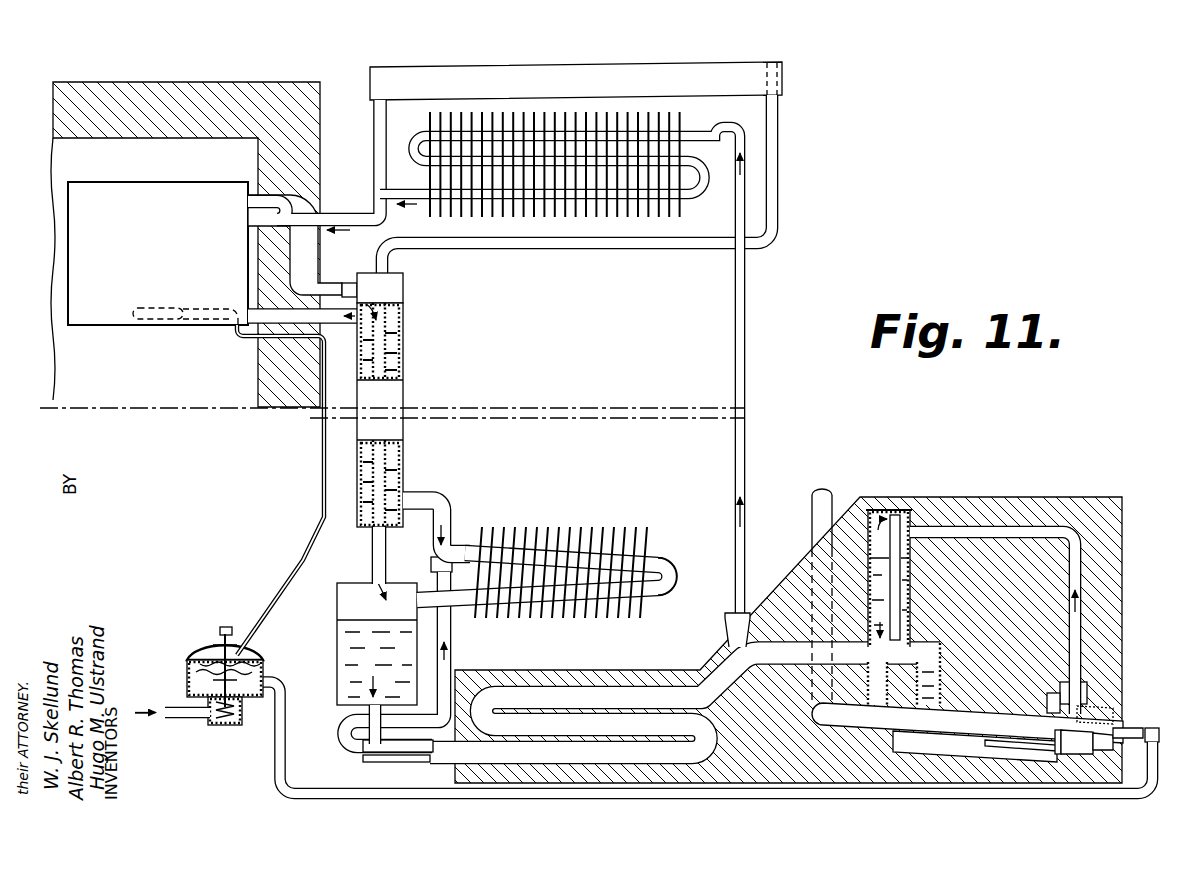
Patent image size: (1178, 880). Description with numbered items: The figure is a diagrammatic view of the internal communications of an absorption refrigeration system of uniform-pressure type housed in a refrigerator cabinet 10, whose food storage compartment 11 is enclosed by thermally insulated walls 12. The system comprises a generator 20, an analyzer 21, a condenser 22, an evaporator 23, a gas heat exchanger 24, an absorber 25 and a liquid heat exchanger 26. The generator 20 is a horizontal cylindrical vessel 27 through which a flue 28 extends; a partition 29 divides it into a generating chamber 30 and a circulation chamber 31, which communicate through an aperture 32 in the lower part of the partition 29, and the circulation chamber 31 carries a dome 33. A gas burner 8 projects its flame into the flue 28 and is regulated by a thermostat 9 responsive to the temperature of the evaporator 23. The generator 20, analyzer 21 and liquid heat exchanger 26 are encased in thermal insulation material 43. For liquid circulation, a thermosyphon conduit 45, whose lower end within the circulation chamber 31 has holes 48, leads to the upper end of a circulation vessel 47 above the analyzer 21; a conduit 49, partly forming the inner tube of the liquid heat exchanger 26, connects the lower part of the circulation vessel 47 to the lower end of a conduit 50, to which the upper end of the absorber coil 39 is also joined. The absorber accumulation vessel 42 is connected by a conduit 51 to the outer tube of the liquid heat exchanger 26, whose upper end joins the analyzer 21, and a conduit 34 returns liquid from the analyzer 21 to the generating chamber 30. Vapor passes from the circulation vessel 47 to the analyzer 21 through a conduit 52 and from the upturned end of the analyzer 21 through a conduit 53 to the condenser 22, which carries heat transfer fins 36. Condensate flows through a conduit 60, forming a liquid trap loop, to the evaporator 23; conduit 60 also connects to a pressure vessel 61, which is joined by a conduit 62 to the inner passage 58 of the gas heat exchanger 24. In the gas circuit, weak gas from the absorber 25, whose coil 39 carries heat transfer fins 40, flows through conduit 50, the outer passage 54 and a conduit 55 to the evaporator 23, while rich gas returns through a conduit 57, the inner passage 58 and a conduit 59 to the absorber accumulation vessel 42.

The gas burner 8 is at (1148, 729).
The thermostat 9 is at (200, 643).
The refrigerator cabinet 10 is at (252, 66).
The food storage compartment 11 is at (153, 368).
The thermally insulated walls 12 is at (142, 128).
The generator 20 is at (990, 752).
The analyzer 21 is at (847, 665).
The condenser 22 is at (584, 196).
The evaporator 23 is at (186, 185).
The gas heat exchanger 24 is at (400, 401).
The absorber 25 is at (534, 547).
The liquid heat exchanger 26 is at (565, 691).
The horizontal cylindrical vessel 27 is at (1108, 757).
The flue 28 is at (938, 724).
The partition 29 is at (1053, 706).
The generating chamber 30 is at (1025, 750).
The circulation chamber 31 is at (1083, 754).
The aperture 32 is at (1059, 754).
The dome 33 is at (1089, 688).
The conduit 34 is at (942, 688).
The heat transfer fins 36 is at (445, 214).
The absorber coil 39 is at (597, 553).
The heat transfer fins 40 is at (637, 552).
The absorber accumulation vessel 42 is at (336, 666).
The thermal insulation material 43 is at (789, 585).
The thermosyphon conduit 45 is at (1082, 627).
The circulation vessel 47 is at (878, 507).
The holes 48 is at (1100, 706).
The conduit 49 is at (444, 658).
The conduit 50 is at (427, 499).
The conduit 51 is at (369, 712).
The conduit 52 is at (896, 597).
The conduit 53 is at (745, 413).
The outer passage 54 is at (400, 455).
The conduit 55 is at (262, 306).
The conduit 57 is at (293, 250).
The inner passage 58 is at (388, 326).
The conduit 59 is at (371, 555).
The conduit 60 is at (374, 140).
The pressure vessel 61 is at (447, 69).
The conduit 62 is at (778, 137).